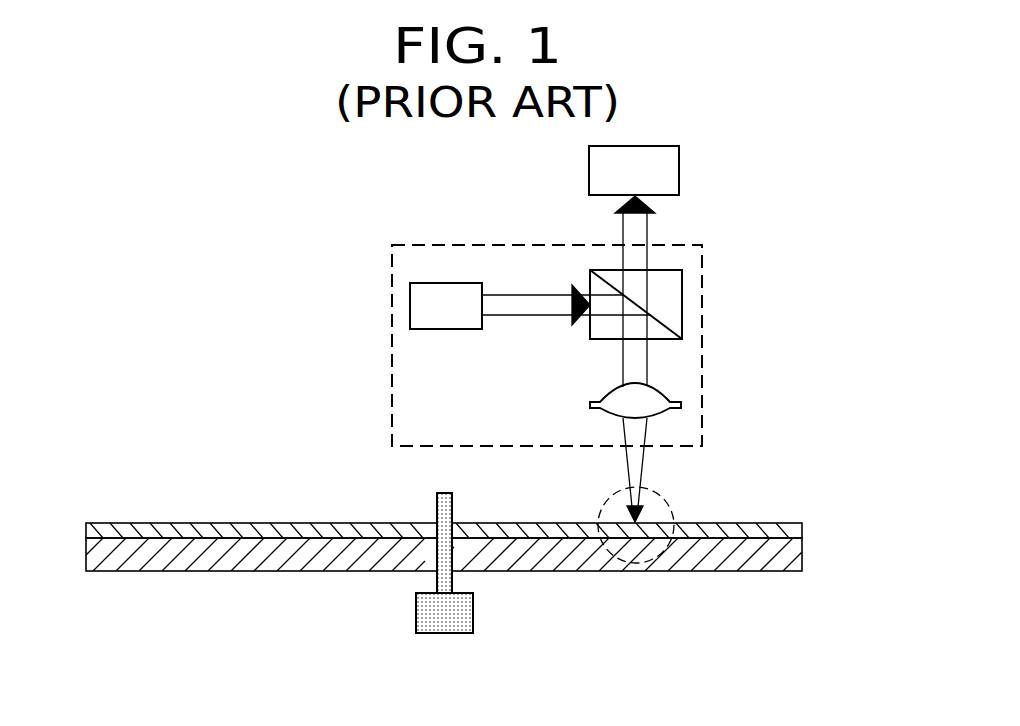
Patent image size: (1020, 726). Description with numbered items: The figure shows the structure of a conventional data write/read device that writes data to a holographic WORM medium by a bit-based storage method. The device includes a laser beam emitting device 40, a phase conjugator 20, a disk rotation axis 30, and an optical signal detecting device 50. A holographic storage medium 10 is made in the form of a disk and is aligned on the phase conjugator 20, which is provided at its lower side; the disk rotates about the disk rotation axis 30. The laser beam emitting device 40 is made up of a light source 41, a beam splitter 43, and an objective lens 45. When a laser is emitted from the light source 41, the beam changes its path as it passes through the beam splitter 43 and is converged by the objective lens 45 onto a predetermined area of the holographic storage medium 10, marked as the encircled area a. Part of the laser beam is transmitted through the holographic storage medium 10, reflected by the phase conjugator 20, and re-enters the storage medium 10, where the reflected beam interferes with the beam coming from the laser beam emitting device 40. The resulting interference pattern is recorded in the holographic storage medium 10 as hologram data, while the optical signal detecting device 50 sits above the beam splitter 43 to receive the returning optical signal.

The holographic storage medium 10 is at (802, 525).
The phase conjugator 20 is at (802, 552).
The disk rotation axis 30 is at (447, 633).
The laser beam emitting device 40 is at (700, 350).
The light source 41 is at (410, 299).
The beam splitter 43 is at (682, 279).
The objective lens 45 is at (681, 405).
The optical signal detecting device 50 is at (679, 167).
The encircled area a is at (648, 560).